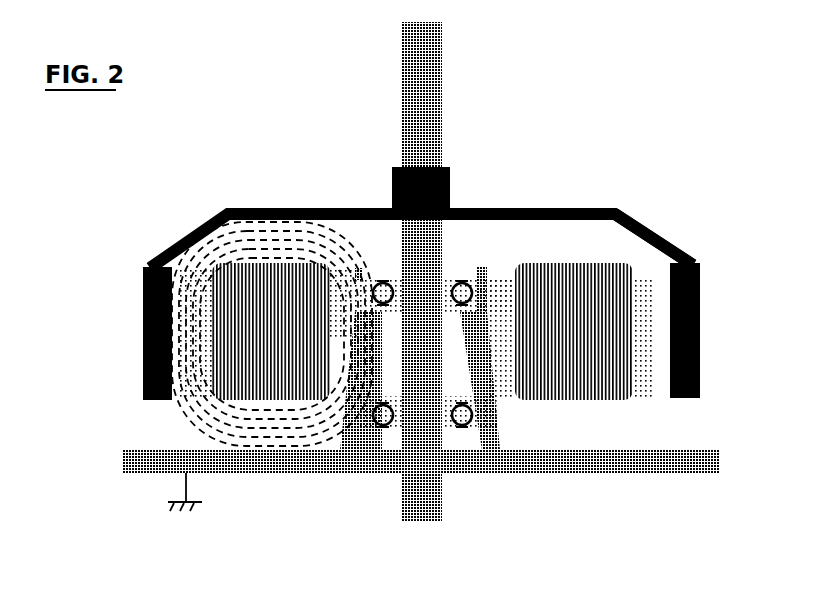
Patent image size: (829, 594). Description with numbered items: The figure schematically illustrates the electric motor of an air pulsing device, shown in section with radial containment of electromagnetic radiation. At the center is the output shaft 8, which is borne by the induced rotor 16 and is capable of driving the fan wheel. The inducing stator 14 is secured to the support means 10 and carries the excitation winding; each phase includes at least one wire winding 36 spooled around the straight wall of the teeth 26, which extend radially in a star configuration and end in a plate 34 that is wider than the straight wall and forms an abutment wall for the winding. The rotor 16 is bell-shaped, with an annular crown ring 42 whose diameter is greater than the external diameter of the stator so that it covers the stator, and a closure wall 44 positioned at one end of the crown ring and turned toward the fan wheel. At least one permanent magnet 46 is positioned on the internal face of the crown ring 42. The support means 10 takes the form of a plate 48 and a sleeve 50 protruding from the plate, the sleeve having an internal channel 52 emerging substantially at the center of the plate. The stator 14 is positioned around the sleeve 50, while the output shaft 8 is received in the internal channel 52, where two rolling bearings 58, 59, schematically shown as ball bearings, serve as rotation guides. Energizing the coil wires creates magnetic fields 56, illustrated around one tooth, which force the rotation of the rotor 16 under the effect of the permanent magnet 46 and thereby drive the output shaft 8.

The output shaft 8 is at (420, 61).
The support means 10 is at (437, 296).
The inducing stator 14 is at (580, 255).
The induced rotor 16 is at (659, 223).
The teeth 26 is at (498, 298).
The plate 34 is at (648, 307).
The wire winding 36 is at (540, 262).
The annular crown ring 42 is at (700, 361).
The closure wall 44 is at (573, 208).
The permanent magnet 46 is at (700, 320).
The plate 48 is at (265, 450).
The sleeve 50 is at (358, 318).
The internal channel 52 is at (454, 376).
The magnetic fields 56 is at (204, 256).
The rolling bearing 58 is at (383, 428).
The rolling bearing 59 is at (463, 282).